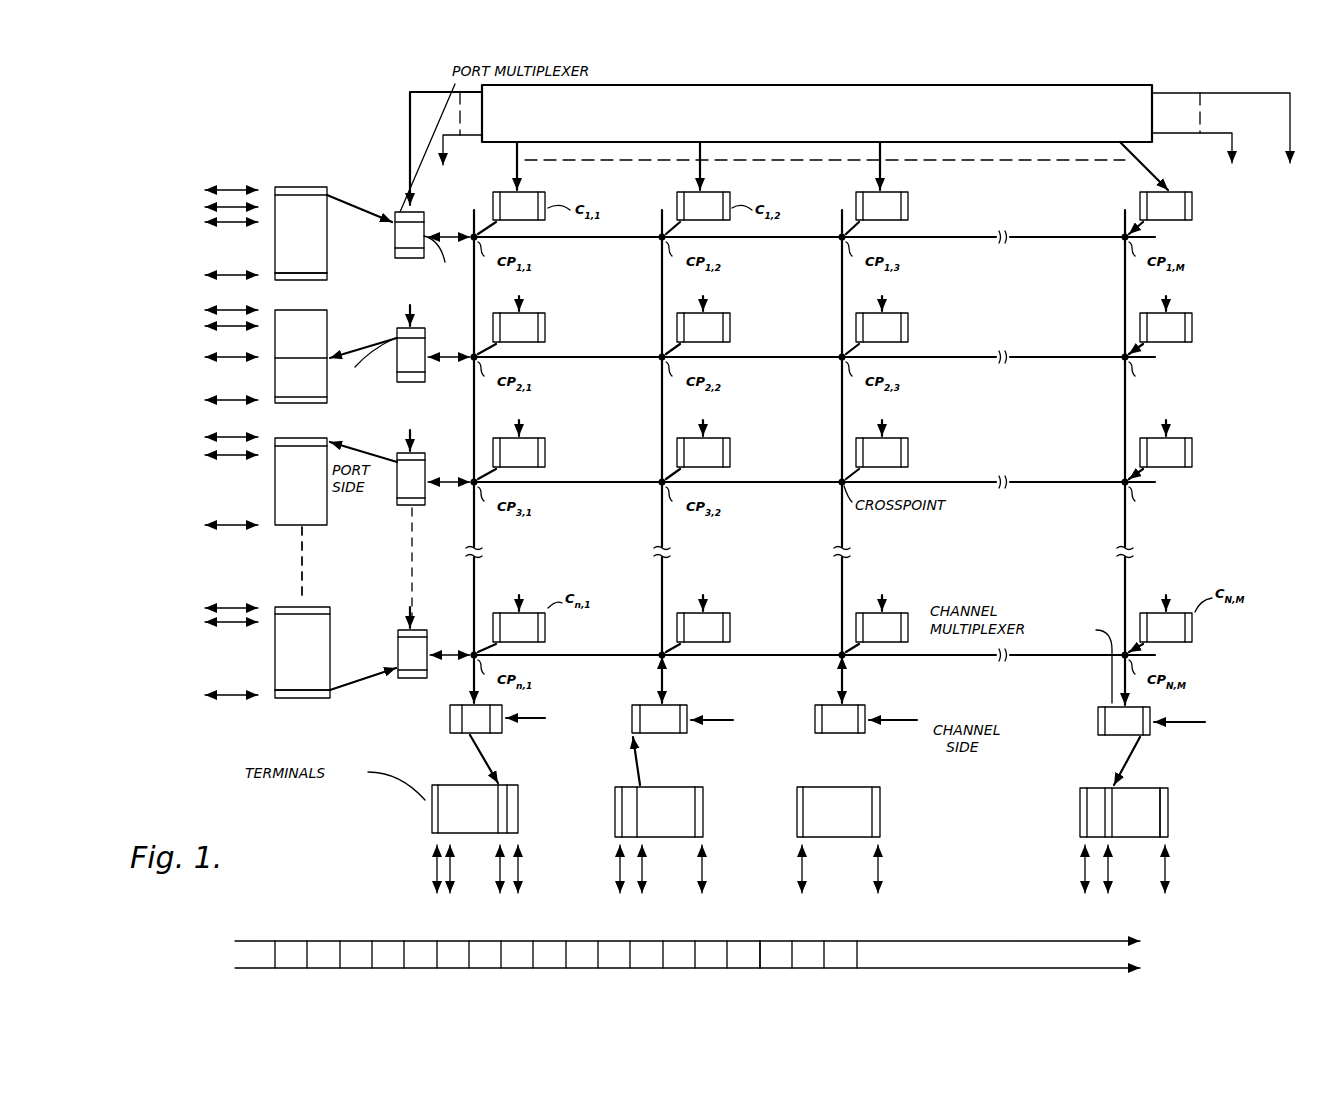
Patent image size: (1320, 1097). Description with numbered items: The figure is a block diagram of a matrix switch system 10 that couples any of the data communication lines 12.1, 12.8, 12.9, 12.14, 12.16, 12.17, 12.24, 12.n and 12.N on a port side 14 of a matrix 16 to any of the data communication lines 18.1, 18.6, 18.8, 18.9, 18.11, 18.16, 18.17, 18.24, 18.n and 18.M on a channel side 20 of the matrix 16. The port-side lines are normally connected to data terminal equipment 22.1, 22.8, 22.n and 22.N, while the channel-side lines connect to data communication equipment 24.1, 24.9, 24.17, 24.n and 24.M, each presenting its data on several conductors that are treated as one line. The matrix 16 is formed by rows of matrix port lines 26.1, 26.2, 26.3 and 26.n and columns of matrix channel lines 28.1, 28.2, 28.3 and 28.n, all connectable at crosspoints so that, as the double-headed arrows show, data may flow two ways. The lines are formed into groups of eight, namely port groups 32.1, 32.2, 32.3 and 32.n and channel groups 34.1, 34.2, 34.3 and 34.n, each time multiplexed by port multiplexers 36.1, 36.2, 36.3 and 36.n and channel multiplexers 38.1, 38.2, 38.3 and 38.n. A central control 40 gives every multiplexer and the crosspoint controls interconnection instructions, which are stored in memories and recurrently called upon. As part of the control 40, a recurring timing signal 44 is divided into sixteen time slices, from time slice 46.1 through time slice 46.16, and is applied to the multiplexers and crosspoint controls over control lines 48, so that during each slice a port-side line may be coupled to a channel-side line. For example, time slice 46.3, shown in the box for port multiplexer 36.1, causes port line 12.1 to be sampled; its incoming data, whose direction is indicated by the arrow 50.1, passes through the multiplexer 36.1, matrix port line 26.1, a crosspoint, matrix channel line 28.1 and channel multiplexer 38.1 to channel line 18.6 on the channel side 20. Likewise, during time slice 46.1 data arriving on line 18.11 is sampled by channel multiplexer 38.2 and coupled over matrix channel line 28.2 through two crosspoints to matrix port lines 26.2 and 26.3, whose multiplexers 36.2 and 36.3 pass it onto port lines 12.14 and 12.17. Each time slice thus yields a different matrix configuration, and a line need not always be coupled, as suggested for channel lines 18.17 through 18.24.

The matrix switch system 10 is at (270, 124).
The data communication line 12.1 is at (222, 186).
The data communication line 12.8 is at (218, 278).
The data communication line 12.9 is at (222, 310).
The data communication line 12.14 is at (222, 356).
The data communication line 12.16 is at (210, 400).
The data communication line 12.17 is at (215, 437).
The data communication line 12.24 is at (215, 525).
The data communication line 12.n is at (215, 606).
The data communication line 12.N is at (232, 700).
The port side 14 is at (339, 556).
The matrix 16 is at (1198, 397).
The data communication line 18.1 is at (432, 876).
The data communication line 18.6 is at (498, 872).
The data communication line 18.8 is at (520, 876).
The data communication line 18.9 is at (618, 866).
The data communication line 18.11 is at (644, 874).
The data communication line 18.16 is at (704, 874).
The data communication line 18.17 is at (805, 876).
The data communication line 18.24 is at (882, 876).
The data communication line 18.n is at (1082, 873).
The data communication line 18.M is at (1168, 874).
The channel side 20 is at (995, 701).
The data terminal equipment 22.1 is at (297, 187).
The data terminal equipment 22.8 is at (318, 282).
The data terminal equipment 22.n is at (318, 607).
The data terminal equipment 22.N is at (300, 698).
The data communication equipment 24.1 is at (430, 812).
The data communication equipment 24.9 is at (615, 818).
The data communication equipment 24.17 is at (797, 818).
The data communication equipment 24.n is at (1080, 815).
The data communication equipment 24.M is at (1168, 816).
The matrix port line 26.1 is at (448, 225).
The matrix port line 26.2 is at (450, 345).
The matrix port line 26.3 is at (448, 470).
The matrix port line 26.n is at (448, 642).
The matrix channel line 28.1 is at (482, 690).
The matrix channel line 28.2 is at (670, 688).
The matrix channel line 28.3 is at (850, 688).
The matrix channel line 28.n is at (1132, 682).
The group of port lines 32.1 is at (216, 218).
The group of port lines 32.2 is at (193, 357).
The group of port lines 32.3 is at (193, 490).
The group of port lines 32.n is at (237, 632).
The group of channel lines 34.1 is at (467, 887).
The group of channel lines 34.2 is at (665, 887).
The group of channel lines 34.3 is at (877, 887).
The group of channel lines 34.n is at (1123, 887).
The port multiplexer 36.1 is at (393, 240).
The port multiplexer 36.2 is at (432, 374).
The port multiplexer 36.3 is at (377, 473).
The port multiplexer 36.n is at (412, 684).
The channel multiplexer 38.1 is at (450, 722).
The channel multiplexer 38.2 is at (672, 735).
The channel multiplexer 38.3 is at (853, 735).
The channel multiplexer 38.n is at (1115, 737).
The central control 40 is at (968, 88).
The timing signal 44 is at (687, 951).
The time slice 46.1 is at (288, 990).
The time slice 46.3 is at (372, 992).
The time slice 46.16 is at (770, 969).
The control line 48 is at (410, 90).
The arrow 50.1 is at (375, 203).